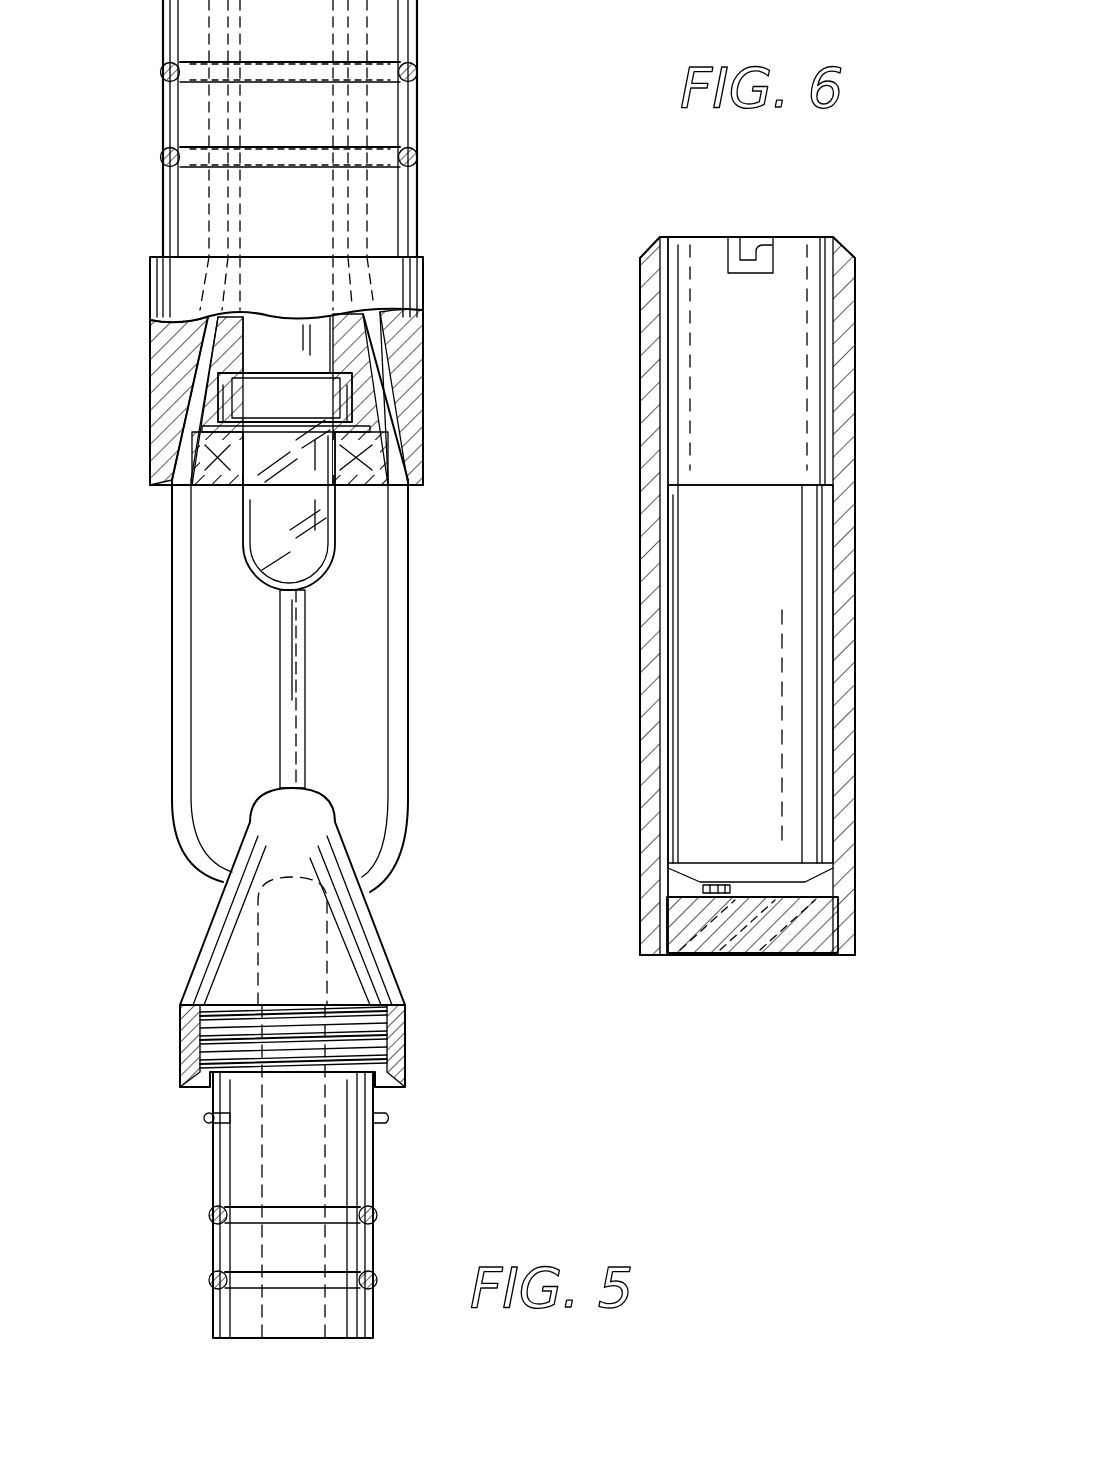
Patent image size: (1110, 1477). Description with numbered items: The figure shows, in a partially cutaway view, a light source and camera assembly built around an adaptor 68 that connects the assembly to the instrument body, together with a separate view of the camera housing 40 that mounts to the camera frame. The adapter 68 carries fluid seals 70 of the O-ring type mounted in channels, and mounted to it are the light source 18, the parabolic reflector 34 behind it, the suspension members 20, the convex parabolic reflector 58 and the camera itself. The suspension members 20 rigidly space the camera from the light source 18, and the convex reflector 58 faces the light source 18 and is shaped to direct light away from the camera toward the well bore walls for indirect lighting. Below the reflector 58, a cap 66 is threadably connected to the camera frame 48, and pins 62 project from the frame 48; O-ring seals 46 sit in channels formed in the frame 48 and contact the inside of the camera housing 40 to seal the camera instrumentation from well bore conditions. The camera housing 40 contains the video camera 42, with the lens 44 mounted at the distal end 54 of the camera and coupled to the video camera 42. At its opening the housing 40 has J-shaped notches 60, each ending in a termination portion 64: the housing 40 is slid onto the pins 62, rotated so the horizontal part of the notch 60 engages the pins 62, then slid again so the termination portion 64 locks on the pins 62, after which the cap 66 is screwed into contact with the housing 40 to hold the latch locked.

In FIG. 5, the light source 18 is at (240, 548).
In FIG. 5, the suspension members 20 is at (410, 693).
In FIG. 5, the parabolic reflector 34 is at (363, 447).
In FIG. 5, the O-ring seals 46 is at (378, 1215).
In FIG. 5, the camera frame 48 is at (213, 1170).
In FIG. 5, the convex parabolic reflector 58 is at (200, 940).
In FIG. 5, the pins 62 is at (391, 1118).
In FIG. 5, the cap 66 is at (407, 1023).
In FIG. 5, the adaptor 68 is at (163, 207).
In FIG. 5, the fluid seals 70 is at (418, 72).
In FIG. 6, the camera housing 40 is at (648, 602).
In FIG. 6, the video camera 42 is at (757, 715).
In FIG. 6, the lens 44 is at (712, 957).
In FIG. 6, the distal end 54 is at (847, 962).
In FIG. 6, the J-shaped notches 60 is at (740, 240).
In FIG. 6, the termination portion 64 is at (765, 250).